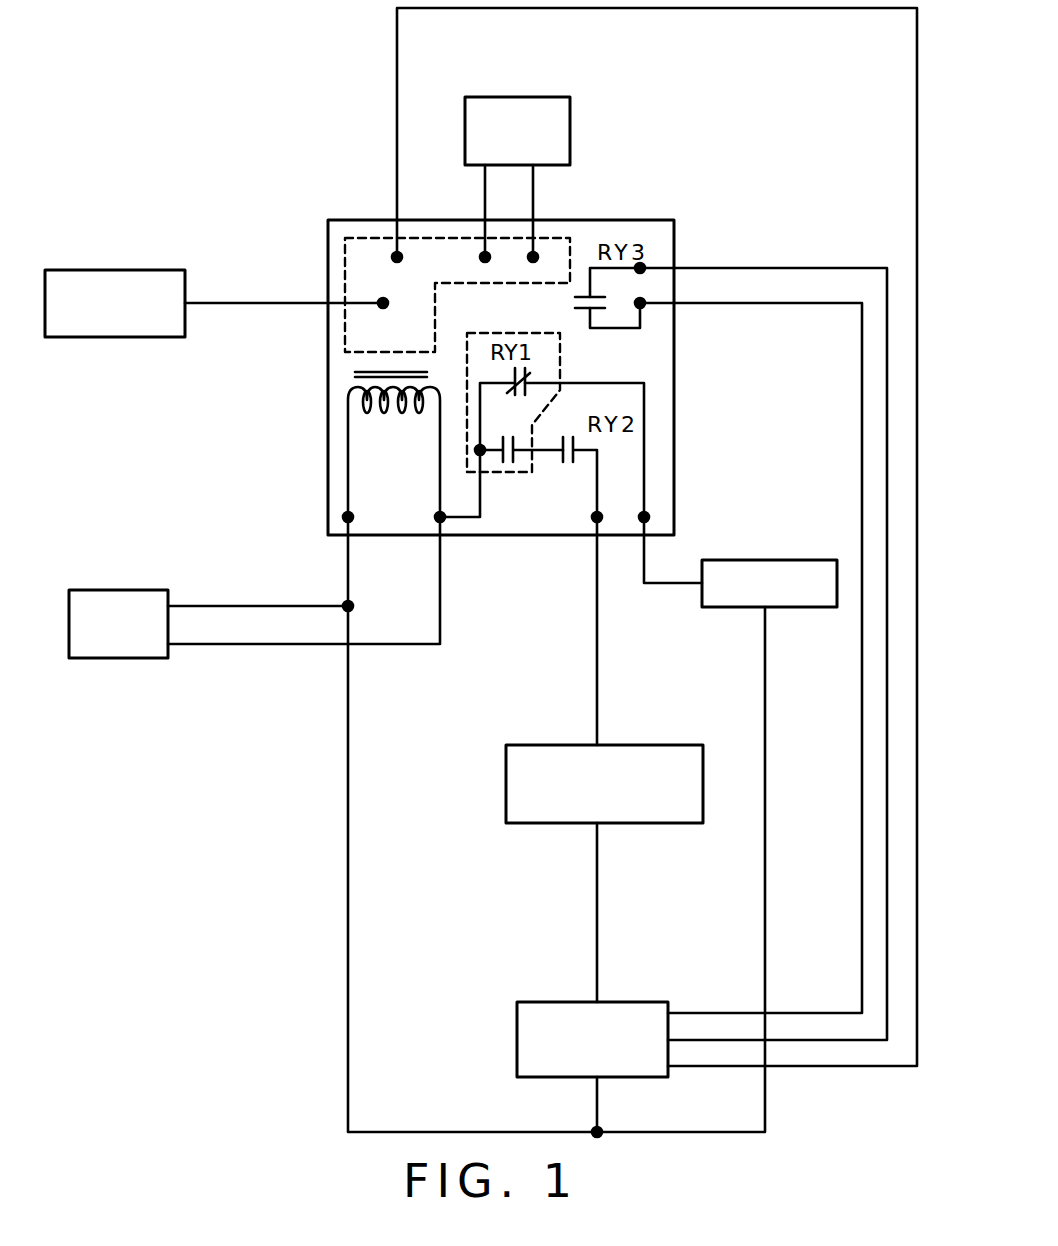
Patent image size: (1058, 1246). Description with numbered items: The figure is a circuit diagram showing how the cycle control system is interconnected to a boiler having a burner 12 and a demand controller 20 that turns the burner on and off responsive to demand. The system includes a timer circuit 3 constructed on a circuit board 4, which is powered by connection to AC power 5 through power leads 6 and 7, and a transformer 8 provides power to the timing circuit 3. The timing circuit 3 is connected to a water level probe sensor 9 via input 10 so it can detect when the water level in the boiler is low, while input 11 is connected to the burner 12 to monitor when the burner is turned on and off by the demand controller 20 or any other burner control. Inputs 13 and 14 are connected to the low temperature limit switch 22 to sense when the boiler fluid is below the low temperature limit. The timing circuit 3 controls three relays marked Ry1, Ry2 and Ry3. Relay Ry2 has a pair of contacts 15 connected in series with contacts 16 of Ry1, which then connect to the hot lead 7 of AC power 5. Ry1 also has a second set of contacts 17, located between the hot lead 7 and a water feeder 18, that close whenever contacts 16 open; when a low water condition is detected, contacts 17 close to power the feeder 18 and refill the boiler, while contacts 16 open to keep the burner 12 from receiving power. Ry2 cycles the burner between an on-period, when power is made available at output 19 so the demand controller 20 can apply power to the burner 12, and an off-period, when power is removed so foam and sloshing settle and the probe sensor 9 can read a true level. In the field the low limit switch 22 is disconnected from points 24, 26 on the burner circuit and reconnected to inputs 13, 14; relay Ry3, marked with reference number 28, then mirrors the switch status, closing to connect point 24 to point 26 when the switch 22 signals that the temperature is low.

The timer circuit 3 is at (350, 238).
The circuit board 4 is at (327, 237).
The AC power 5 is at (130, 590).
The power lead 6 is at (349, 583).
The hot lead 7 is at (441, 582).
The transformer 8 is at (346, 397).
The water level probe sensor 9 is at (137, 270).
The input 10 is at (288, 300).
The input 11 is at (395, 155).
The burner 12 is at (515, 1040).
The input 13 is at (485, 200).
The input 14 is at (536, 195).
The contacts of Ry2 15 is at (567, 463).
The contacts of Ry1 16 is at (510, 463).
The second set of contacts of Ry1 17 is at (530, 373).
The water feeder 18 is at (762, 560).
The output 19 is at (595, 655).
The demand controller 20 is at (633, 745).
The low temperature limit switch 22 is at (572, 127).
The point on burner circuit 24 is at (692, 1012).
The point on burner circuit 26 is at (790, 1040).
The relay Ry3 28 is at (575, 302).